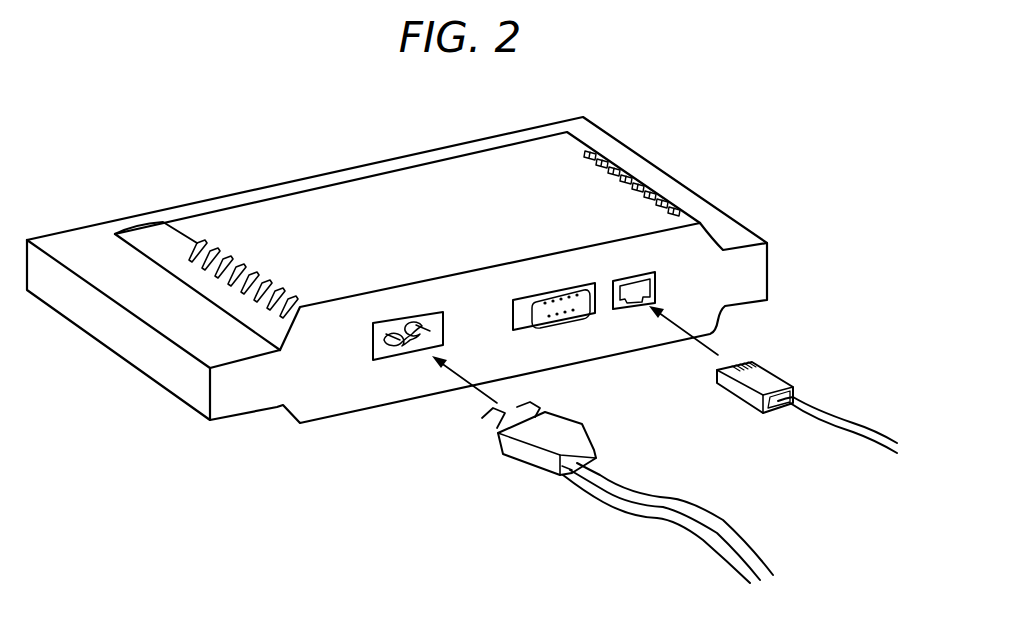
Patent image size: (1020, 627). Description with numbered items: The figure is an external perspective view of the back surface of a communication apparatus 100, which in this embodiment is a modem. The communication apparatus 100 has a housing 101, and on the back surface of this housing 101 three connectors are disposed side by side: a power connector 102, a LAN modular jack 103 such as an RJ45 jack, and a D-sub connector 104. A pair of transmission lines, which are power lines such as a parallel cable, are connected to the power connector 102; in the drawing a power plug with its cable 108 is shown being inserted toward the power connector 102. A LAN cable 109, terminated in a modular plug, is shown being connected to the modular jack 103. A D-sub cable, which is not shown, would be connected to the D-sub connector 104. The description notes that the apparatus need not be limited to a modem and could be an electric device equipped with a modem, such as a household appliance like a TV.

The communication apparatus 100 is at (146, 183).
The housing 101 is at (260, 188).
The power connector 102 is at (404, 362).
The LAN modular jack 103 is at (640, 312).
The D-sub connector 104 is at (565, 328).
The power cable 108 is at (607, 517).
The LAN cable 109 is at (792, 425).